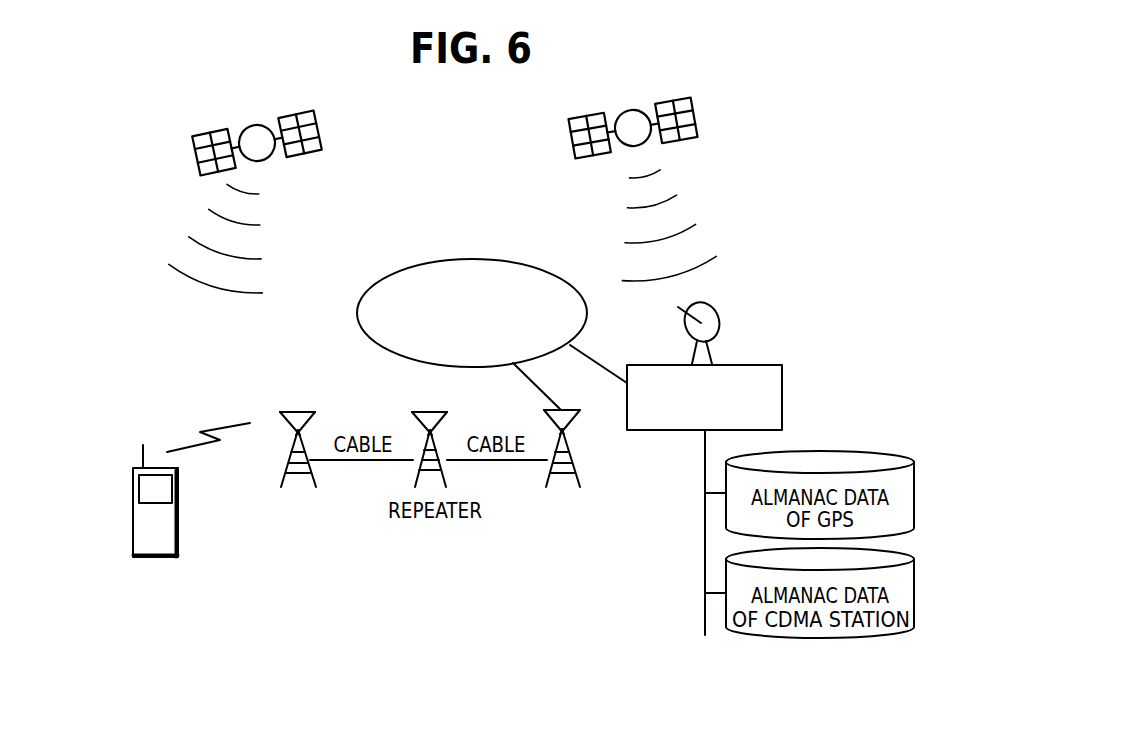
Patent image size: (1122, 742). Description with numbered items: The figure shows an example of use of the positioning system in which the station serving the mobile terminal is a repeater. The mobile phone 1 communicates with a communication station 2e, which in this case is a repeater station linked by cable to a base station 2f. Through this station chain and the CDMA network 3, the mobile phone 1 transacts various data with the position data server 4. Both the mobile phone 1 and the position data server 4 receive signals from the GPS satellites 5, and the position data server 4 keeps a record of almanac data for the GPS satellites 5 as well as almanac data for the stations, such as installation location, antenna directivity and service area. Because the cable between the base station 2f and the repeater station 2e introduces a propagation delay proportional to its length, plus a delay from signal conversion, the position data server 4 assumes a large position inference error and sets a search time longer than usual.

The mobile phone 1 is at (133, 528).
The communication station 2e is at (280, 477).
The base station 2f is at (580, 475).
The CDMA network 3 is at (474, 259).
The position data server 4 is at (782, 388).
The GPS satellites 5 is at (259, 126).